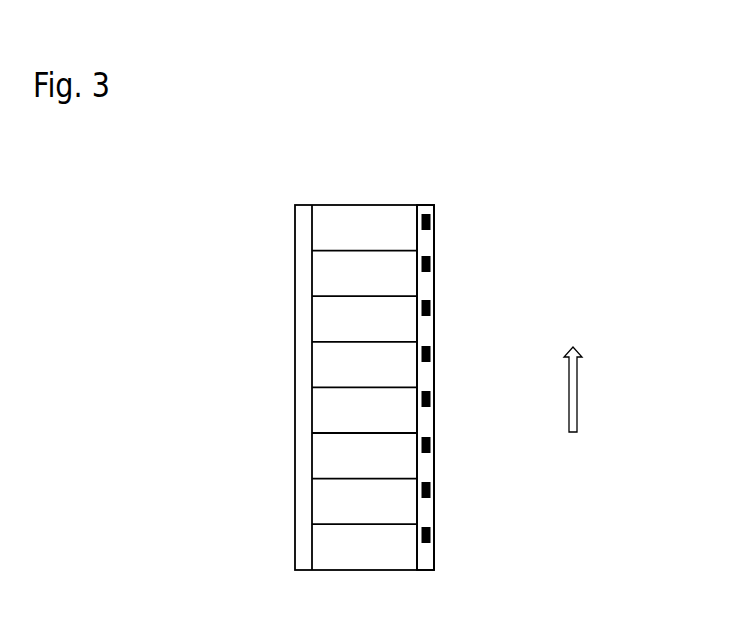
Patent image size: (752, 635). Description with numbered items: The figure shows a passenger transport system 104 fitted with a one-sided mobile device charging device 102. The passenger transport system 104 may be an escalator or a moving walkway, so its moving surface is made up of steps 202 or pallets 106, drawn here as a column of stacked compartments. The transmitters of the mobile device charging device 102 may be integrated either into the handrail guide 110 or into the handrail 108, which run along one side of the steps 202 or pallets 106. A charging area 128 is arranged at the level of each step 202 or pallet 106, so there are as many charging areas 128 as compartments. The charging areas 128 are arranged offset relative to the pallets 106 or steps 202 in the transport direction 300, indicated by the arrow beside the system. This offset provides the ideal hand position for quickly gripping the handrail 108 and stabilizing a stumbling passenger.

The mobile device charging device 102 is at (427, 205).
The passenger transport system 104 is at (433, 339).
The pallet 106 is at (364, 358).
The step 202 is at (332, 218).
The handrail 108 is at (494, 392).
The handrail guide 110 is at (434, 559).
The charging area 128 is at (432, 223).
The transport direction 300 is at (578, 393).